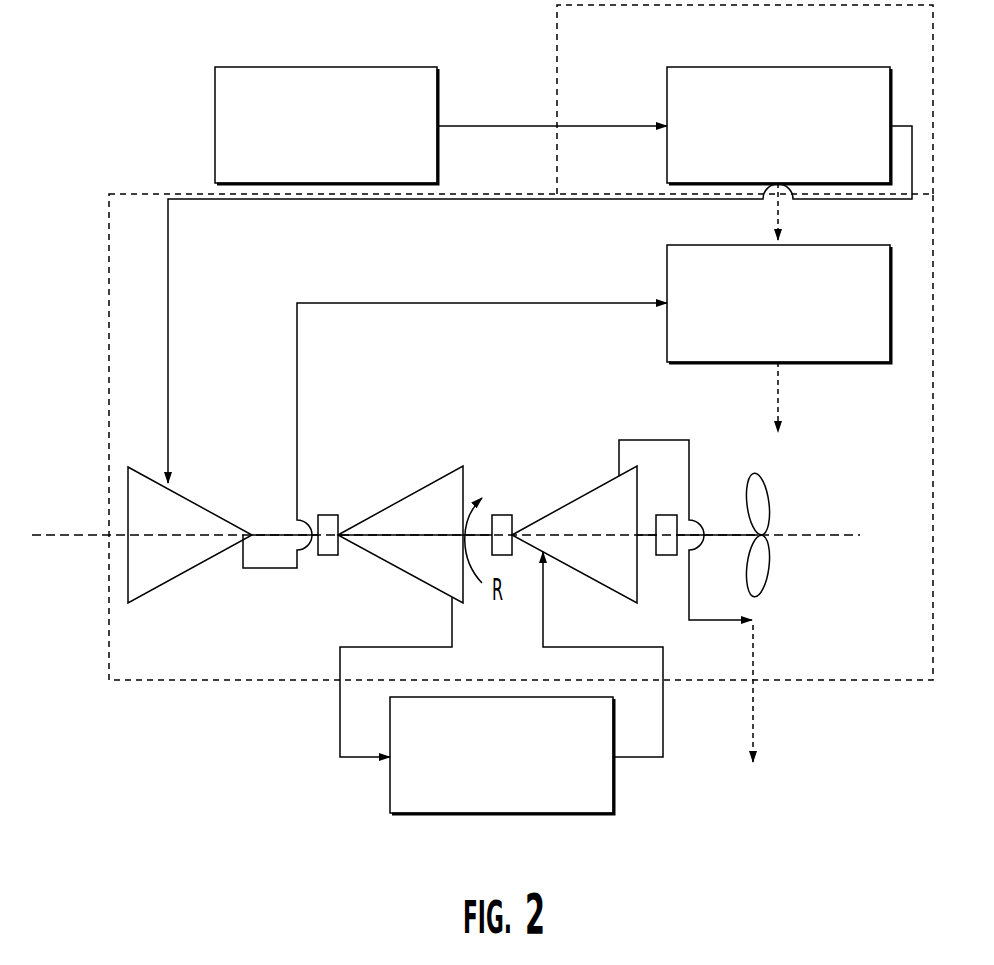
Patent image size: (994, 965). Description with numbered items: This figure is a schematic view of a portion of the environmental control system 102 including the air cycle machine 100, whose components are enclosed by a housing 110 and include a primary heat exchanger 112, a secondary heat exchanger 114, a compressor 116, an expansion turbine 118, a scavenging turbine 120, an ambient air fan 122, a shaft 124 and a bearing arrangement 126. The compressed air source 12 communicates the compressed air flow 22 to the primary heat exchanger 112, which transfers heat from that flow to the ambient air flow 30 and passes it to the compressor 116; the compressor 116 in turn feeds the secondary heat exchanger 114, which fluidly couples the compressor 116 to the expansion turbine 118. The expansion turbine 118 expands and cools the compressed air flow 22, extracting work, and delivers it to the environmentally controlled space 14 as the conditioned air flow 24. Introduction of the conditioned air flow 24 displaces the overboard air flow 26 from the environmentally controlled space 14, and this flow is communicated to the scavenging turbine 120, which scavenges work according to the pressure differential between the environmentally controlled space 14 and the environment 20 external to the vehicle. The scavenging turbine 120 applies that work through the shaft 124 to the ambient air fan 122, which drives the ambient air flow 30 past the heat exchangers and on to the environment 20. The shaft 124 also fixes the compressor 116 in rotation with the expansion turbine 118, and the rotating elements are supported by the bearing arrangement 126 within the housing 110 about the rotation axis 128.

The compressed air source 12 is at (372, 67).
The environmentally controlled space 14 is at (540, 813).
The environment external to the vehicle 20 is at (826, 792).
The compressed air flow 22 is at (490, 126).
The conditioned air flow 24 is at (338, 730).
The overboard air flow 26 is at (665, 747).
The ambient air flow 30 is at (778, 213).
The air cycle machine 100 is at (846, 629).
The environmental control system 102 is at (175, 825).
The housing 110 is at (193, 680).
The primary heat exchanger 112 is at (823, 67).
The secondary heat exchanger 114 is at (823, 245).
The compressor 116 is at (205, 563).
The expansion turbine 118 is at (403, 573).
The scavenging turbine 120 is at (593, 580).
The ambient air fan 122 is at (760, 550).
The shaft 124 is at (260, 533).
The bearing arrangement 126 is at (500, 515).
The rotation axis 128 is at (48, 537).